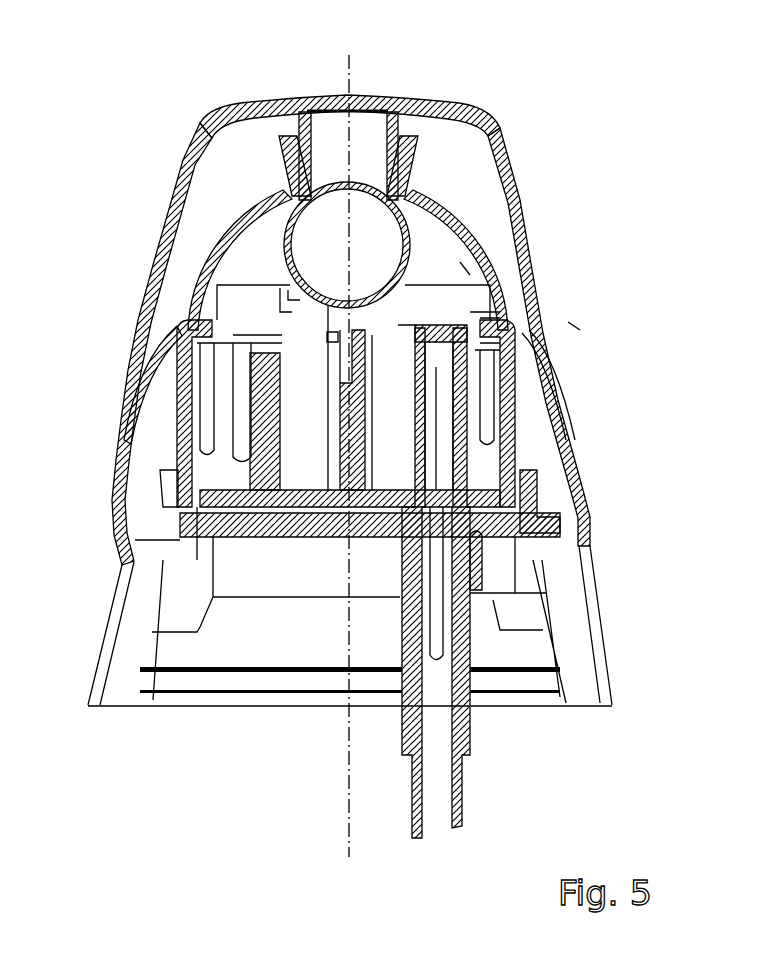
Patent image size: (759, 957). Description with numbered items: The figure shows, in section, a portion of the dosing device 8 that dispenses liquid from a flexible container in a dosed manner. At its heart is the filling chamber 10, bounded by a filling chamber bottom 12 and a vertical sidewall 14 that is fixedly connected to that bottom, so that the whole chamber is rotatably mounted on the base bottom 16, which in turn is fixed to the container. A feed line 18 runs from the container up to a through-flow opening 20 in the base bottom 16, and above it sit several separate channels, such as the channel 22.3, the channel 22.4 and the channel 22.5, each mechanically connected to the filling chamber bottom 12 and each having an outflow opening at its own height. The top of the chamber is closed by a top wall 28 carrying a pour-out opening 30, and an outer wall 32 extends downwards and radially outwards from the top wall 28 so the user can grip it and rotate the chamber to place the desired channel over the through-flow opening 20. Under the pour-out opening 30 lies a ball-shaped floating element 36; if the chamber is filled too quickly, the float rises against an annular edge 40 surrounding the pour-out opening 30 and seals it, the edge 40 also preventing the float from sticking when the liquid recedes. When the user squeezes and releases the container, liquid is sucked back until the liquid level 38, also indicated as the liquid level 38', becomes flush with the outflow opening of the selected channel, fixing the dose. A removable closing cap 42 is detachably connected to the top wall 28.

The dosing device 8 is at (675, 783).
The filling chamber 10 is at (465, 268).
The filling chamber bottom 12 is at (235, 492).
The vertical sidewall 14 is at (215, 285).
The base bottom 16 is at (324, 530).
The feed line 18 is at (461, 798).
The through-flow opening 20 is at (440, 513).
The channel 22.3 is at (500, 317).
The channel 22.4 is at (438, 386).
The channel 22.5 is at (260, 303).
The top wall 28 is at (423, 188).
The pour-out opening 30 is at (366, 156).
The outer wall 32 is at (178, 352).
The floating element 36 is at (418, 212).
The liquid level 38 is at (253, 278).
The liquid level 38' is at (625, 312).
The annular edge 40 is at (262, 193).
The closing cap 42 is at (202, 125).